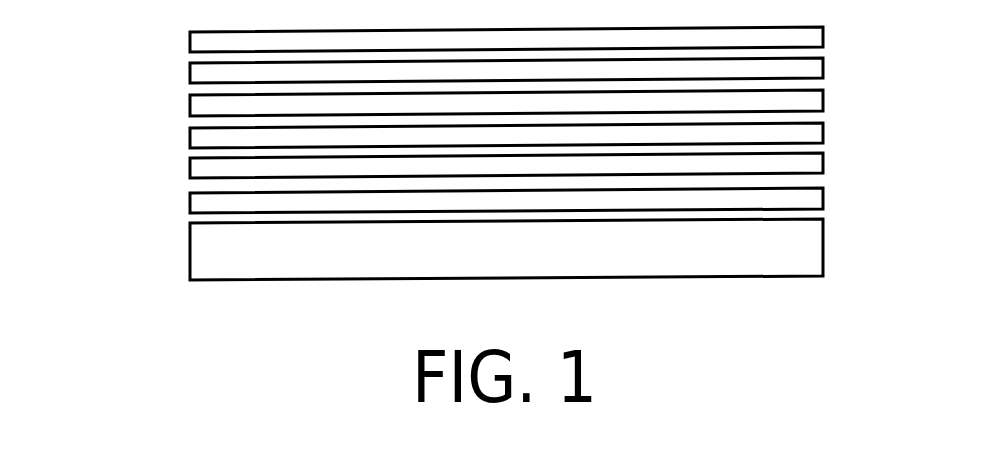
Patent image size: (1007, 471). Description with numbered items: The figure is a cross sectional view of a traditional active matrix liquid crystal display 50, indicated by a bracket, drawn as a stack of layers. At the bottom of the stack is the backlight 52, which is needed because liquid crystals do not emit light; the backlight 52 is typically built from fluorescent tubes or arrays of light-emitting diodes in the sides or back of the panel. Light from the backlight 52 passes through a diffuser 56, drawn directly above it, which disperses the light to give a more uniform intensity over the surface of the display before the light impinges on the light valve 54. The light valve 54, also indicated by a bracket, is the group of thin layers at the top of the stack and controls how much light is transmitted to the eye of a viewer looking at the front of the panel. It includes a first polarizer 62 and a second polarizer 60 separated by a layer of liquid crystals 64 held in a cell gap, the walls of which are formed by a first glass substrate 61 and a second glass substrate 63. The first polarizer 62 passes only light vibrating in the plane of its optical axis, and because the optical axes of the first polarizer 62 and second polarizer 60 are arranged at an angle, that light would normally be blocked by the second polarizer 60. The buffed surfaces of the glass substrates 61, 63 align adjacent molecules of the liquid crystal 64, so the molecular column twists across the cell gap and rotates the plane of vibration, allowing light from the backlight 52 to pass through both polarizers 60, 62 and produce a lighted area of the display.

The liquid crystal display 50 is at (107, 67).
The backlight 52 is at (823, 241).
The light valve 54 is at (175, 35).
The diffuser 56 is at (823, 203).
The second polarizer 60 is at (823, 43).
The first glass substrate 61 is at (823, 138).
The first polarizer 62 is at (823, 168).
The second glass substrate 63 is at (823, 73).
The layer of liquid crystals 64 is at (823, 105).